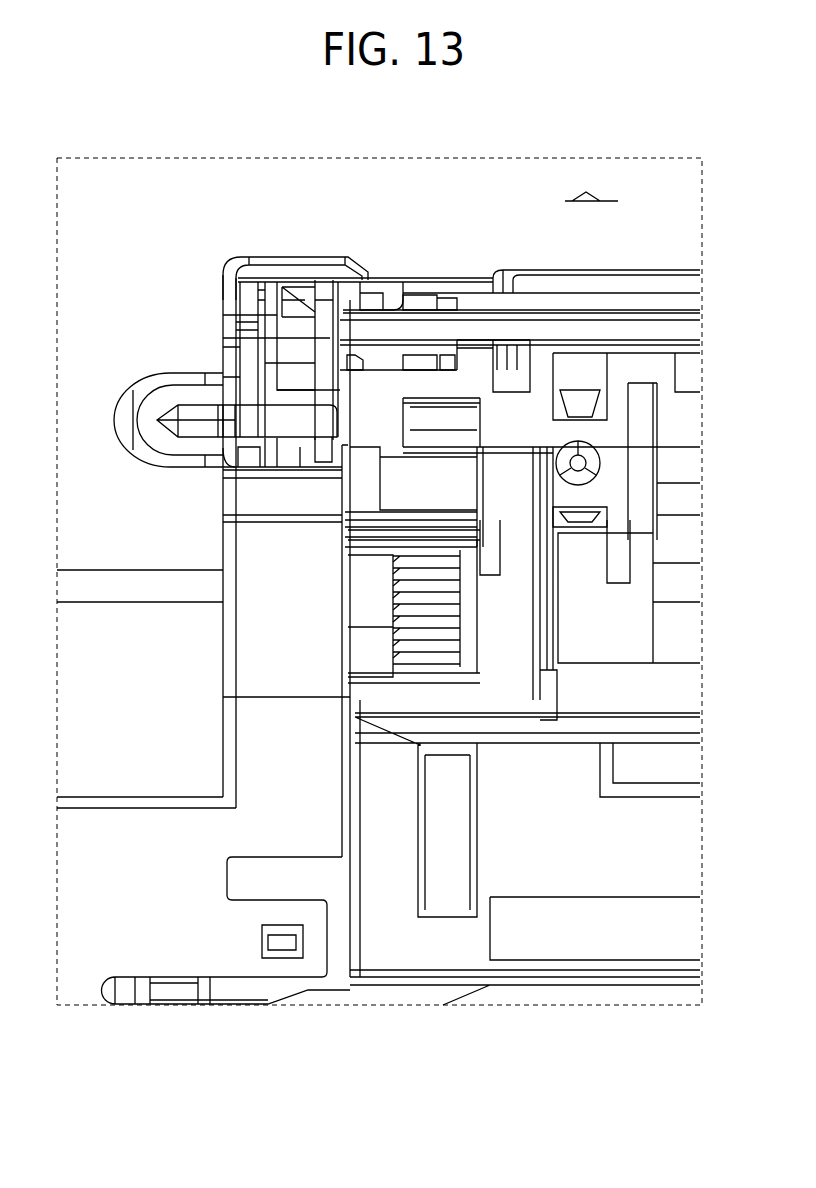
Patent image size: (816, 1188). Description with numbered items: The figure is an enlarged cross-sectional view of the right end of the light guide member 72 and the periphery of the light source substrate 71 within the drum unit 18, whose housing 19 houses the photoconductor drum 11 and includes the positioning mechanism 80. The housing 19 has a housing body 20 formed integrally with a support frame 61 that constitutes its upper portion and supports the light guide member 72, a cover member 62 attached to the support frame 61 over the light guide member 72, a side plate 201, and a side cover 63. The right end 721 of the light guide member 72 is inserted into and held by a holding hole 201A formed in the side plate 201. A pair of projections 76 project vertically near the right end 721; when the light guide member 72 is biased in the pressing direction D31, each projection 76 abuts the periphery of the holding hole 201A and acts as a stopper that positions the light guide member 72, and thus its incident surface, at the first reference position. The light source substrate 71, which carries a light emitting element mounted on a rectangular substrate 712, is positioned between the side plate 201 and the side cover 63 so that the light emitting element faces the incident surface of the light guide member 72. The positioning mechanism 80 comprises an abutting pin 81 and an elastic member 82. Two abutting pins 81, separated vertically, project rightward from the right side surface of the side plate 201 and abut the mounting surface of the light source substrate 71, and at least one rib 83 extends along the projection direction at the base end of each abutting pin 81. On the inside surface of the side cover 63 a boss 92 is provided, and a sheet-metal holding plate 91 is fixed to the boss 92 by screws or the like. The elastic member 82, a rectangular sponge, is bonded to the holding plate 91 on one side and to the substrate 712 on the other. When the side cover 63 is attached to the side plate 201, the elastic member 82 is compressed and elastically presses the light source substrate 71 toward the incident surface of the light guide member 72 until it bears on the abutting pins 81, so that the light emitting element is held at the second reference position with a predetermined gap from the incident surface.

The photoconductor drum 11 is at (650, 268).
The drum unit 18 is at (142, 240).
The housing 19 is at (346, 230).
The housing body 20 is at (530, 477).
The support frame 61 is at (668, 368).
The cover member 62 is at (605, 290).
The side cover 63 is at (232, 262).
The light source substrate 71 is at (233, 322).
The light guide member 72 is at (540, 312).
The projection 76 is at (415, 285).
The positioning mechanism 80 is at (298, 452).
The abutting pin 81 is at (290, 285).
The elastic member 82 is at (228, 332).
The rib 83 is at (357, 465).
The holding plate 91 is at (268, 287).
The boss 92 is at (243, 352).
The side plate 201 is at (397, 288).
The holding hole 201A is at (322, 452).
The substrate 712 is at (327, 288).
The right end 721 is at (383, 285).
The pressing direction D31 is at (596, 201).